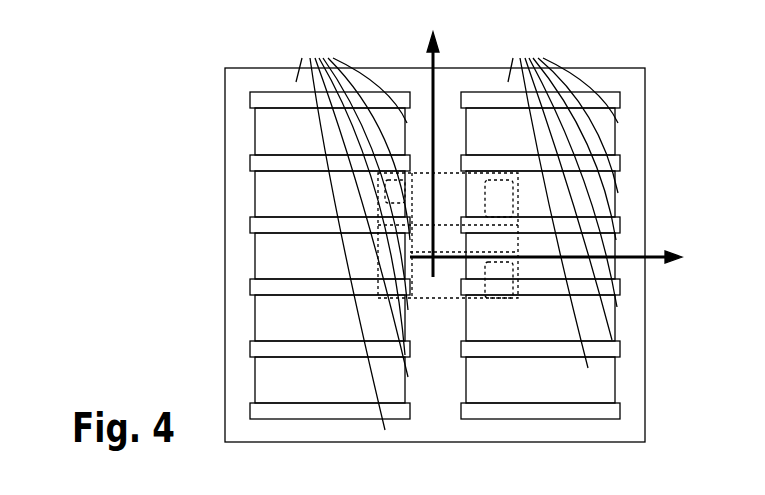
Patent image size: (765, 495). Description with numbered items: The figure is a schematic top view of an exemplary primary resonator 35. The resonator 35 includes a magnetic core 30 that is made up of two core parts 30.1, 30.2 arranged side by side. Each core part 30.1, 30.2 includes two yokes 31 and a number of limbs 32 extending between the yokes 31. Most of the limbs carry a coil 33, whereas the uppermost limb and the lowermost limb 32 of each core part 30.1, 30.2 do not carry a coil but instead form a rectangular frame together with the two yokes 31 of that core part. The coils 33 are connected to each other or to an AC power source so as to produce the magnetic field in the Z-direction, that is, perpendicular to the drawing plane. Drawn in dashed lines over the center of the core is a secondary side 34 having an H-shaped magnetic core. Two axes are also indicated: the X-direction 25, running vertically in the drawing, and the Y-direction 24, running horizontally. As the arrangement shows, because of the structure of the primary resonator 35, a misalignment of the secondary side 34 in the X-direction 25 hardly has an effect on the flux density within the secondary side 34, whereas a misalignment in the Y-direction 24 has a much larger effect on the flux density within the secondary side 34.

The primary resonator 35 is at (94, 72).
The magnetic core 30 is at (223, 83).
The core part 30.1 is at (237, 147).
The core part 30.2 is at (640, 148).
The yoke 31 is at (237, 203).
The limb 32 is at (457, 230).
The coil 33 is at (435, 258).
The secondary side 34 is at (520, 299).
The Y-direction 24 is at (682, 253).
The X-direction 25 is at (437, 62).